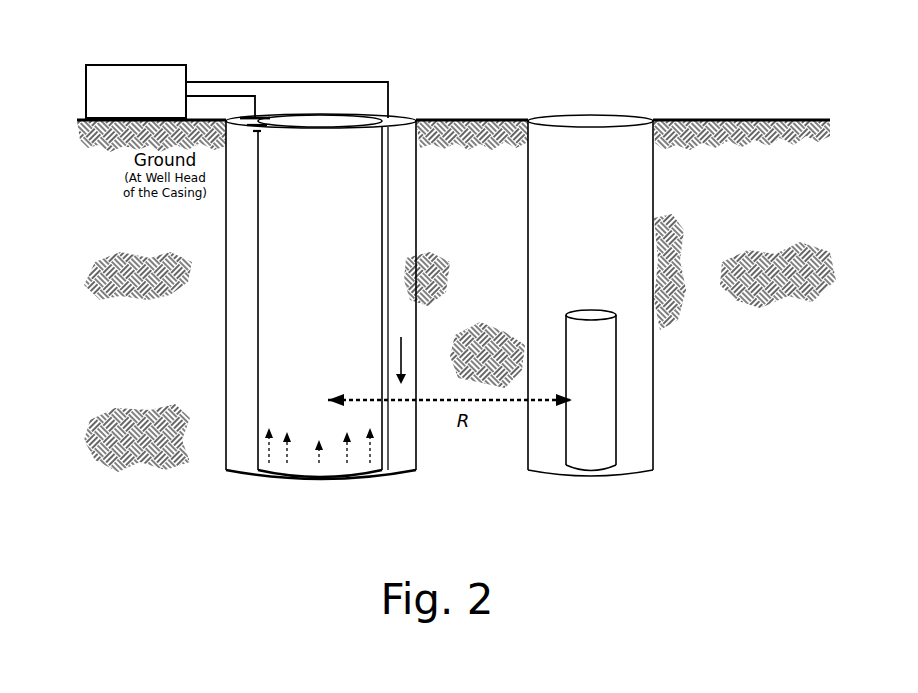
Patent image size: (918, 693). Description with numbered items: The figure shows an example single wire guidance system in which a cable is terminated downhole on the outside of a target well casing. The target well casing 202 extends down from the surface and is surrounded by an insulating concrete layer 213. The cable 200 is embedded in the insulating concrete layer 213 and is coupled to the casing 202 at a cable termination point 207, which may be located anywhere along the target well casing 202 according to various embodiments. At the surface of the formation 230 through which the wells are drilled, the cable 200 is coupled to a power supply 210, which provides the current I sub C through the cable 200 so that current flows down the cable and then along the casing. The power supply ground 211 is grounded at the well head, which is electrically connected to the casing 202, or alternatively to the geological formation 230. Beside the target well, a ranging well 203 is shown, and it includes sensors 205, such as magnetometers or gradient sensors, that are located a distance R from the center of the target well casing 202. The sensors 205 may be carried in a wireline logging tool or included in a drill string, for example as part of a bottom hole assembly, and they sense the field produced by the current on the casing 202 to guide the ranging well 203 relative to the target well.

The cable 200 is at (357, 81).
The casing 202 is at (363, 120).
The ranging well 203 is at (628, 117).
The sensors 205 is at (616, 450).
The cable termination point 207 is at (383, 472).
The power supply 210 is at (135, 64).
The power supply ground 211 is at (253, 116).
The insulating concrete layer 213 is at (405, 135).
The formation 230 is at (775, 128).